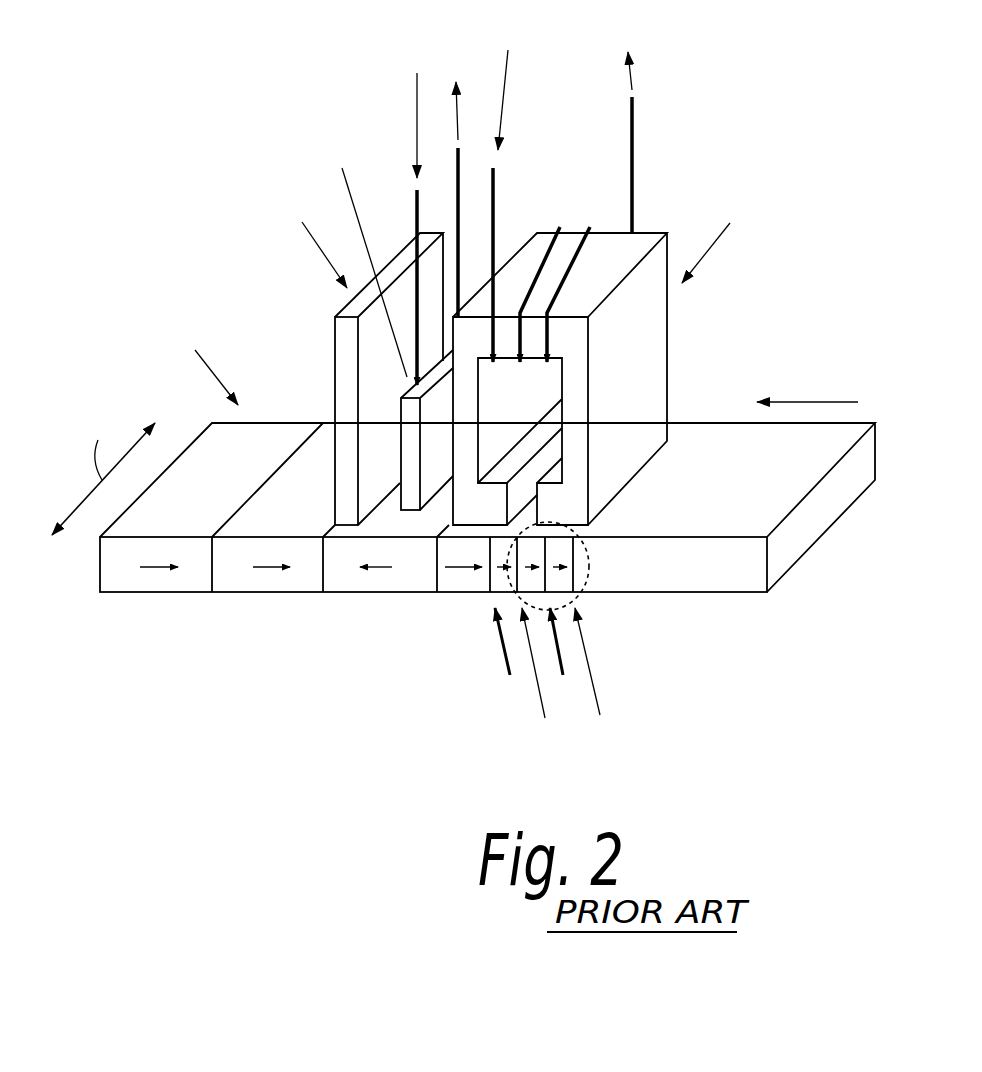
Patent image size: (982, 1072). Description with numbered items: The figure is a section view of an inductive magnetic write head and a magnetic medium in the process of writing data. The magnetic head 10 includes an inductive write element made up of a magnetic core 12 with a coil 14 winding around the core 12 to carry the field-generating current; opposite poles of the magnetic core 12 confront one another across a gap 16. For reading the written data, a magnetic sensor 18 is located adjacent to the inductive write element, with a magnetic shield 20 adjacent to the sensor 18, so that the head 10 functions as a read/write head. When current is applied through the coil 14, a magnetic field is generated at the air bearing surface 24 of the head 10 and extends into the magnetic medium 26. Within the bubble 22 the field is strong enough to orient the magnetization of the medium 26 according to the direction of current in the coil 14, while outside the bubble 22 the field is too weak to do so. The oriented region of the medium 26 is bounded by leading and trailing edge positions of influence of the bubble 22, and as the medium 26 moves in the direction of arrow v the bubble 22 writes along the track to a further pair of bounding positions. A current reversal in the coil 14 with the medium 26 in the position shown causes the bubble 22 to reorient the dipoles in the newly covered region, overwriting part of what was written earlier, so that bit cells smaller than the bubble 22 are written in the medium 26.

The magnetic head 10 is at (755, 258).
The magnetic core 12 is at (668, 363).
The coil 14 is at (587, 226).
The gap 16 is at (520, 520).
The magnetic sensor 18 is at (400, 512).
The magnetic shield 20 is at (333, 330).
The bubble 22 is at (505, 565).
The air bearing surface 24 is at (578, 540).
The magnetic medium 26 is at (808, 553).